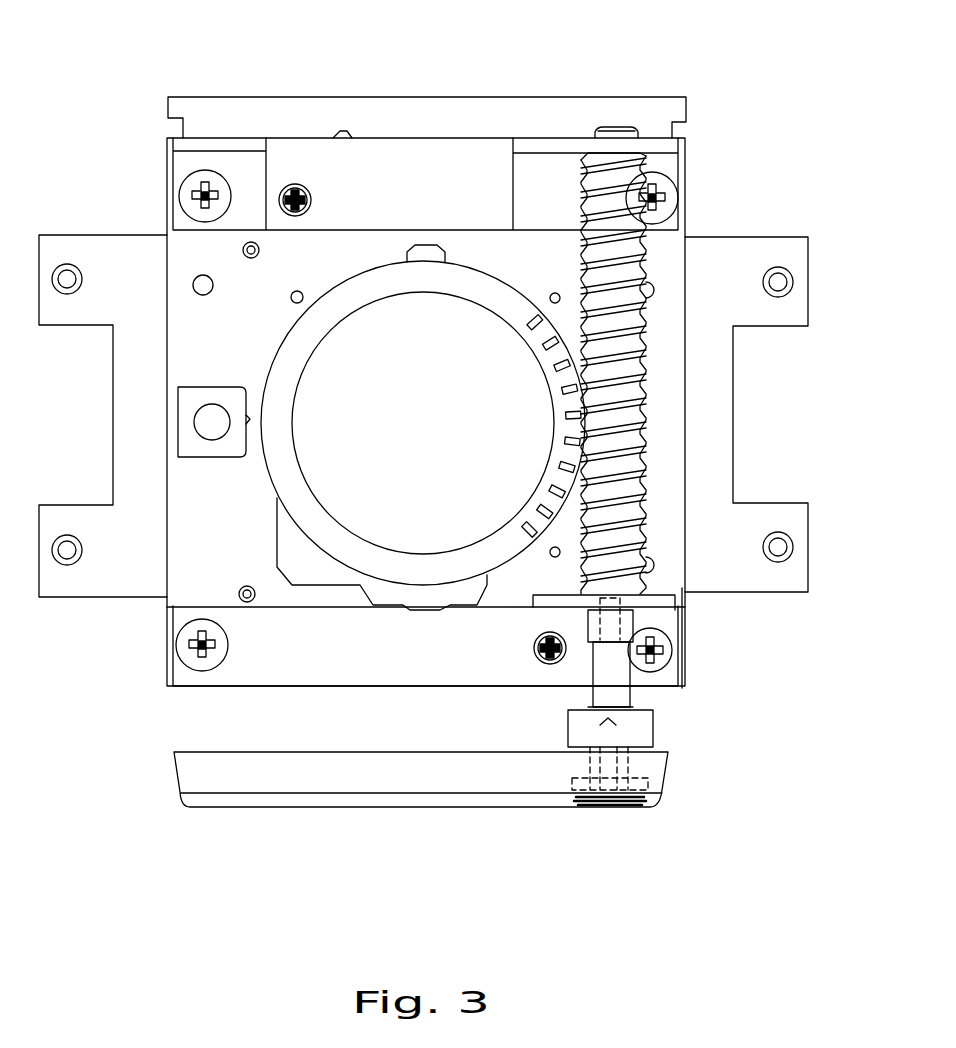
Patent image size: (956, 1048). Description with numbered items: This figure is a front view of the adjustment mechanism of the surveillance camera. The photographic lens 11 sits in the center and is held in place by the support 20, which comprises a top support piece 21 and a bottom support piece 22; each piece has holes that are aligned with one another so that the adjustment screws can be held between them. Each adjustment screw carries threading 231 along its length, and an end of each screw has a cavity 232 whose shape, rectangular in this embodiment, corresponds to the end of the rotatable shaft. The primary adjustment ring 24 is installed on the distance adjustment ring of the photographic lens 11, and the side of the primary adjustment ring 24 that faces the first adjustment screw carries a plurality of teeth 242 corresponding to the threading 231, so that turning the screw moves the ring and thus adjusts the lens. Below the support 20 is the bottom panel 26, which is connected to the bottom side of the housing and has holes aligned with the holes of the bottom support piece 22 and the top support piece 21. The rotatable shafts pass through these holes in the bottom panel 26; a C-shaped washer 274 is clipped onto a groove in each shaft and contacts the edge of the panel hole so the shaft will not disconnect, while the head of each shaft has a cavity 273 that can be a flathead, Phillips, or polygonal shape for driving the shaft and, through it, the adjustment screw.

The photographic lens 11 is at (355, 500).
The support 20 is at (505, 108).
The top support piece 21 is at (682, 140).
The bottom support piece 22 is at (672, 588).
The primary adjustment ring 24 is at (376, 283).
The bottom panel 26 is at (418, 782).
The threading 231 is at (643, 245).
The cavity 232 is at (678, 688).
The teeth 242 is at (527, 318).
The cavity 273 is at (627, 808).
The C-shaped washer 274 is at (655, 708).